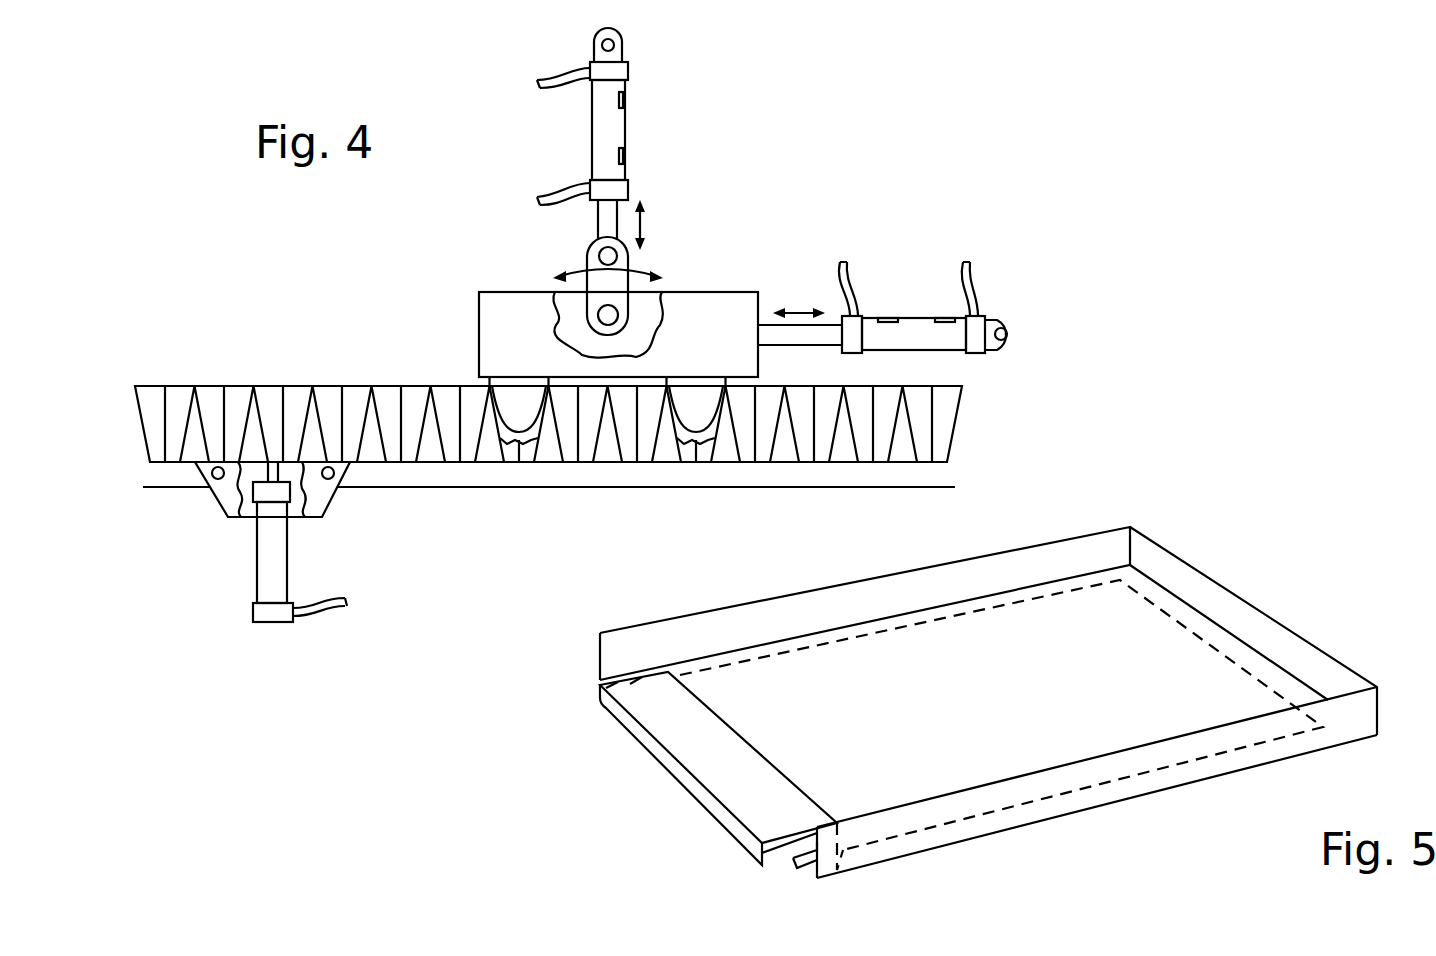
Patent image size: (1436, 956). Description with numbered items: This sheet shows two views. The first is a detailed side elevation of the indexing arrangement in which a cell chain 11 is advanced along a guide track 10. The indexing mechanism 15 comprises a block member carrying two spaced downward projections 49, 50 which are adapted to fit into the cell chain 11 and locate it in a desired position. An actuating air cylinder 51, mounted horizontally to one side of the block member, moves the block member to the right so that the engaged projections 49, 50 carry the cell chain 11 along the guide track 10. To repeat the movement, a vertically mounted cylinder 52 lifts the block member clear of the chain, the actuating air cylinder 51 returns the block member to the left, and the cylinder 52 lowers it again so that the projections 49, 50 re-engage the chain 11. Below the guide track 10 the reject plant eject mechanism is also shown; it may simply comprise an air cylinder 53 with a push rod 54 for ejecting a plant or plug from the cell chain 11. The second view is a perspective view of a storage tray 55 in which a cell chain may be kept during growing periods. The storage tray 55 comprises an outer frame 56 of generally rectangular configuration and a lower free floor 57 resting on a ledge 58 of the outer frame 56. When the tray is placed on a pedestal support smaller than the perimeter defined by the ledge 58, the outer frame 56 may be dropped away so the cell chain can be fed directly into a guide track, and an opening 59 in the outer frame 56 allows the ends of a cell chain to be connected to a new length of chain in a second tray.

In FIG. 4, the guide track 10 is at (500, 488).
In FIG. 4, the cell chain 11 is at (328, 397).
In FIG. 4, the mechanism 15 is at (673, 241).
In FIG. 4, the downward projection 49 is at (525, 408).
In FIG. 4, the downward projection 50 is at (697, 417).
In FIG. 4, the actuating air cylinder 51 is at (915, 325).
In FIG. 4, the cylinder 52 is at (617, 125).
In FIG. 4, the air cylinder 53 is at (279, 575).
In FIG. 4, the push rod 54 is at (264, 484).
In FIG. 5, the storage tray 55 is at (1168, 568).
In FIG. 5, the outer frame 56 is at (895, 585).
In FIG. 5, the lower free floor 57 is at (964, 639).
In FIG. 5, the ledge 58 is at (1027, 598).
In FIG. 5, the opening 59 is at (597, 657).